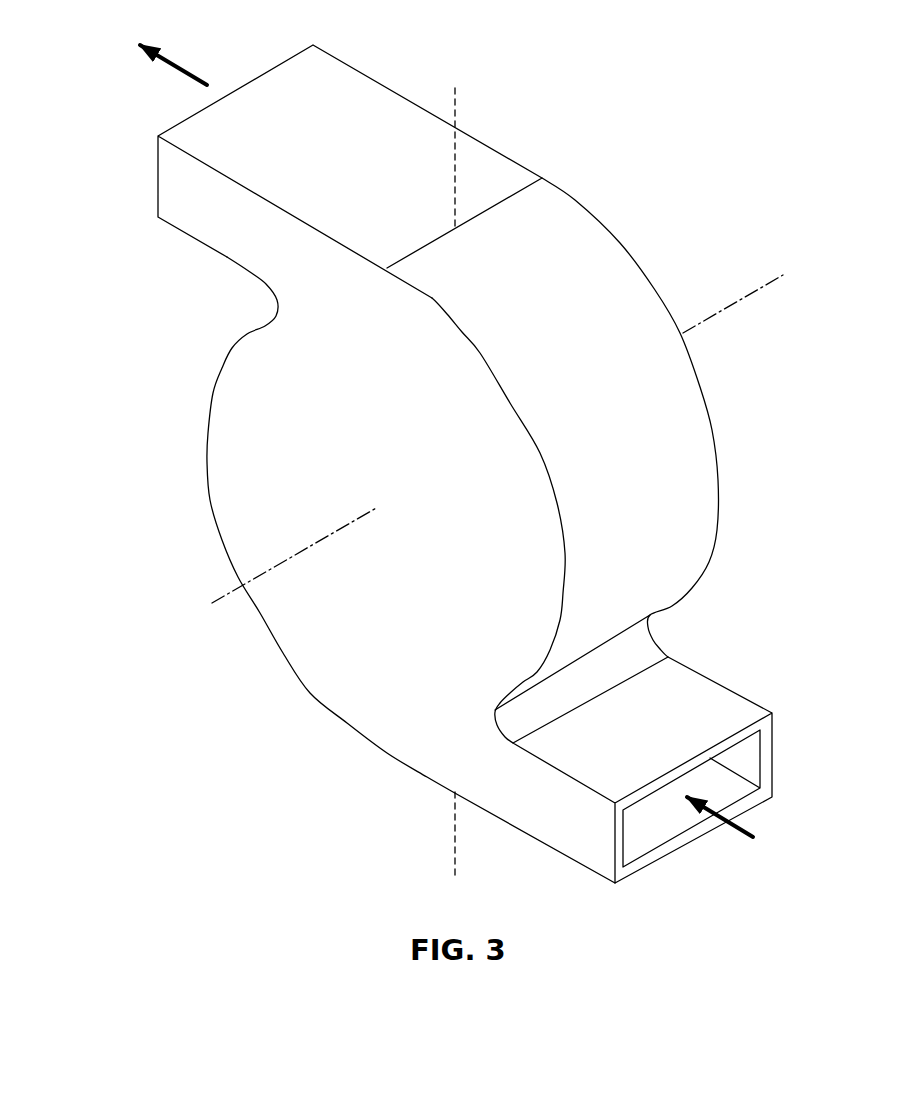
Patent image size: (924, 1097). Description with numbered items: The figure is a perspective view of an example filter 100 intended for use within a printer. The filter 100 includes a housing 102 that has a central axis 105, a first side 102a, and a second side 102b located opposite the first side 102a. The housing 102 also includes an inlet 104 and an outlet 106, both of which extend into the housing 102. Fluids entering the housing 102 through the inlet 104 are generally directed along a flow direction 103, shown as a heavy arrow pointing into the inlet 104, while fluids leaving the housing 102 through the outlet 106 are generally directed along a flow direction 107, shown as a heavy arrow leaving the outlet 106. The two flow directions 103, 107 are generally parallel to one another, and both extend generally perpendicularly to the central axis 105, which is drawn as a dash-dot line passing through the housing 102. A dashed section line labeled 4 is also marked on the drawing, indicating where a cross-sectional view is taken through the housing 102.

The filter 100 is at (827, 152).
The housing 102 is at (620, 243).
The first side 102a is at (230, 472).
The second side 102b is at (715, 428).
The flow direction 103 is at (735, 829).
The inlet 104 is at (748, 762).
The central axis 105 is at (234, 598).
The outlet 106 is at (142, 160).
The flow direction 107 is at (181, 69).
The section line 4- 4 is at (486, 861).